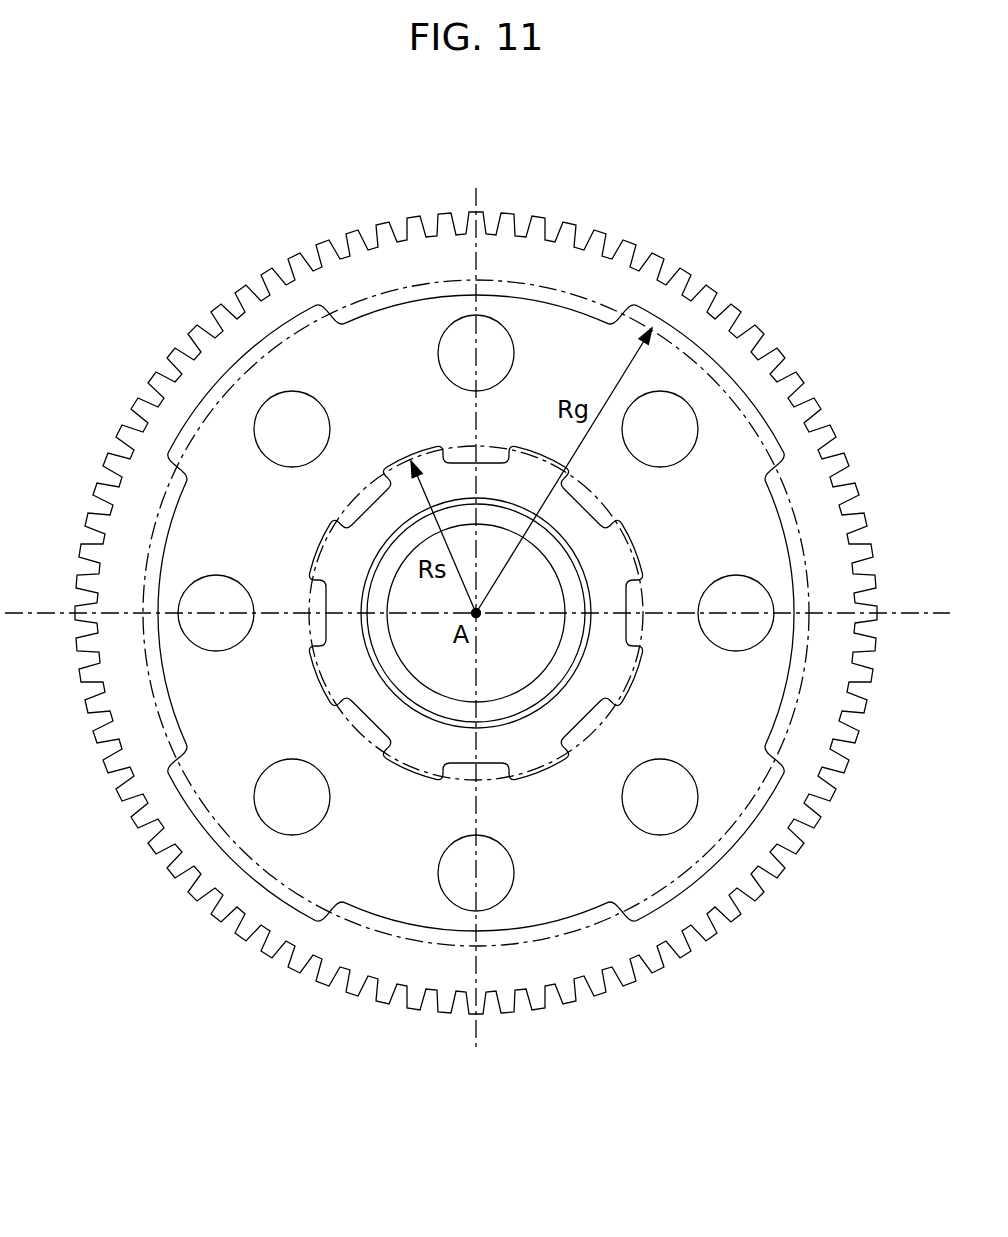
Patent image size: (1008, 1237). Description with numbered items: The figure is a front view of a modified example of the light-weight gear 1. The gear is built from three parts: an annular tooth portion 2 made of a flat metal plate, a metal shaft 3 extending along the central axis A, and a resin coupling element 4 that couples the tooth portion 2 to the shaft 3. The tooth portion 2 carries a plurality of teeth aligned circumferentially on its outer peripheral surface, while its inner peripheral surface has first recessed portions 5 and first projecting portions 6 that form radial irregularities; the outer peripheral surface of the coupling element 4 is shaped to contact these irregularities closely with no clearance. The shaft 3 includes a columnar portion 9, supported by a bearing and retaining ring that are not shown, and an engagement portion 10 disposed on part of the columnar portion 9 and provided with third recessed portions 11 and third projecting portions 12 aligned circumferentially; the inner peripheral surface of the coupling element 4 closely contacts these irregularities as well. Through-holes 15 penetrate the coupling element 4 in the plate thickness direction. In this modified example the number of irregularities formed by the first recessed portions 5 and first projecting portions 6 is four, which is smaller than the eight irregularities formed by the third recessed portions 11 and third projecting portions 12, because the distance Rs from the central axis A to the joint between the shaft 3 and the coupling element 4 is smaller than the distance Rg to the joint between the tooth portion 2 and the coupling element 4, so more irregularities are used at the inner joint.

The light-weight gear 1 is at (150, 173).
The tooth portion 2 is at (188, 318).
The shaft 3 is at (363, 648).
The coupling element 4 is at (590, 330).
The first recessed portion 5 is at (668, 345).
The first projecting portion 6 is at (366, 320).
The columnar portion 9 is at (417, 712).
The engagement portion 10 is at (565, 767).
The third recessed portion 11 is at (462, 448).
The third projecting portion 12 is at (380, 460).
The through-hole 15 is at (456, 330).